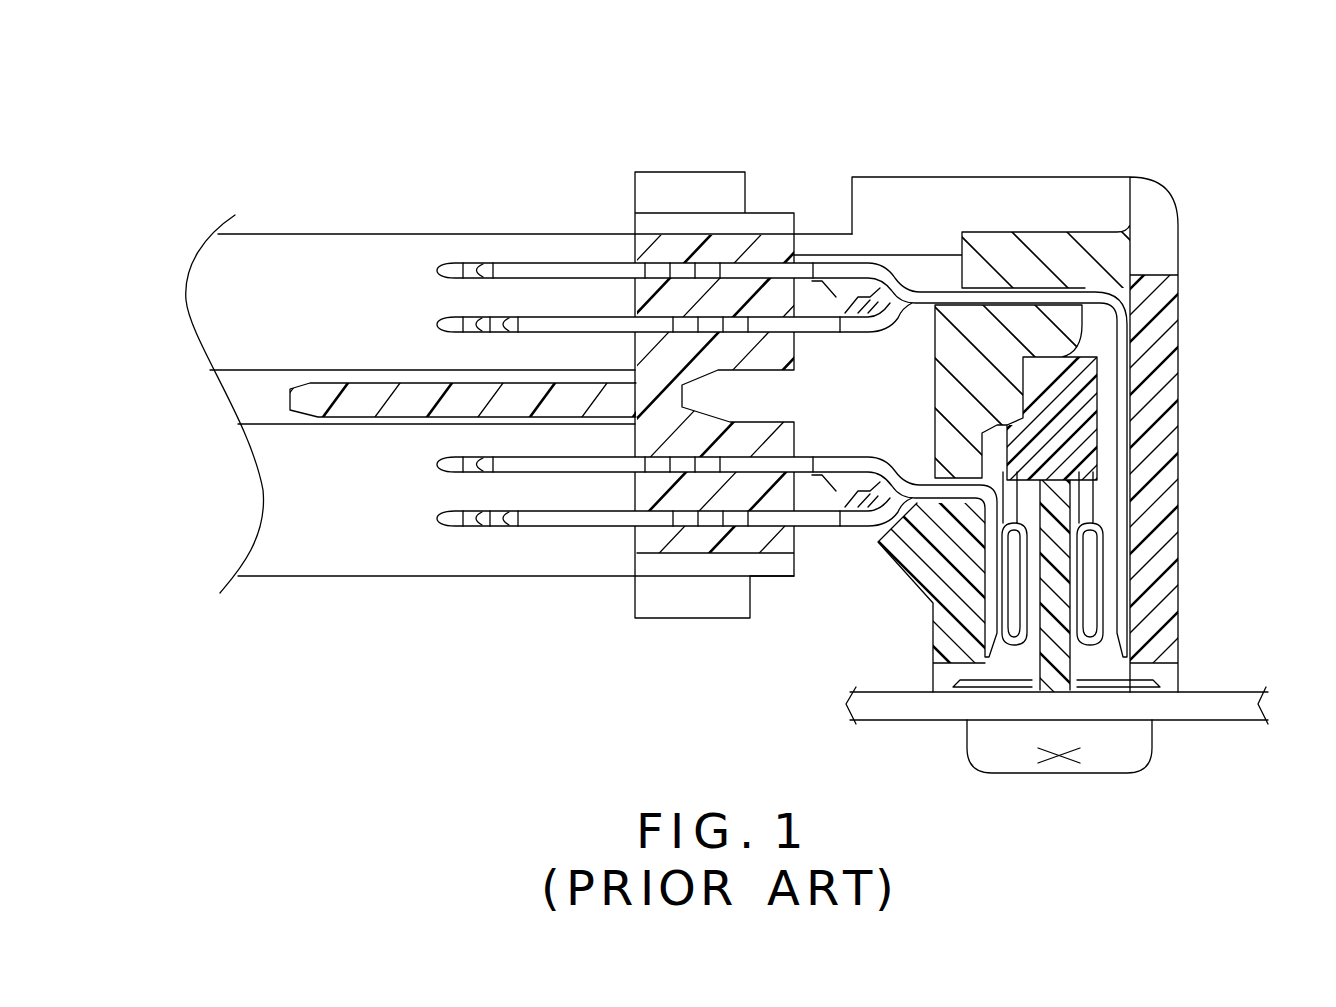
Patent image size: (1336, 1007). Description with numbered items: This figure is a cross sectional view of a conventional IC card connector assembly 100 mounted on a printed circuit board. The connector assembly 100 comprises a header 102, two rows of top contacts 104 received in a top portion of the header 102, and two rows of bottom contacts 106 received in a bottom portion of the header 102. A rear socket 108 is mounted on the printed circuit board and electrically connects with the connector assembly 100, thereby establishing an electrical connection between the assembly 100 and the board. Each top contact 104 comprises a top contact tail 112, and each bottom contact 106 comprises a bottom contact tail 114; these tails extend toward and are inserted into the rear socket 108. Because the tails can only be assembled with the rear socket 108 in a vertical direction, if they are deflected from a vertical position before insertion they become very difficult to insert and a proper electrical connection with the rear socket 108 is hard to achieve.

The IC card connector assembly 100 is at (692, 67).
The header 102 is at (746, 252).
The top contacts 104 is at (547, 268).
The bottom contacts 106 is at (592, 527).
The rear socket 108 is at (1150, 448).
The top contact tail 112 is at (1117, 490).
The bottom contact tail 114 is at (990, 578).